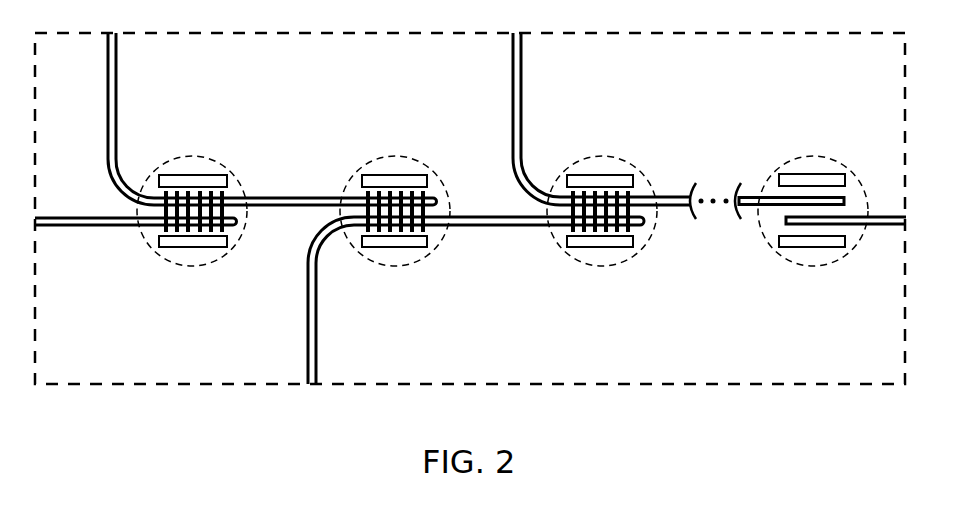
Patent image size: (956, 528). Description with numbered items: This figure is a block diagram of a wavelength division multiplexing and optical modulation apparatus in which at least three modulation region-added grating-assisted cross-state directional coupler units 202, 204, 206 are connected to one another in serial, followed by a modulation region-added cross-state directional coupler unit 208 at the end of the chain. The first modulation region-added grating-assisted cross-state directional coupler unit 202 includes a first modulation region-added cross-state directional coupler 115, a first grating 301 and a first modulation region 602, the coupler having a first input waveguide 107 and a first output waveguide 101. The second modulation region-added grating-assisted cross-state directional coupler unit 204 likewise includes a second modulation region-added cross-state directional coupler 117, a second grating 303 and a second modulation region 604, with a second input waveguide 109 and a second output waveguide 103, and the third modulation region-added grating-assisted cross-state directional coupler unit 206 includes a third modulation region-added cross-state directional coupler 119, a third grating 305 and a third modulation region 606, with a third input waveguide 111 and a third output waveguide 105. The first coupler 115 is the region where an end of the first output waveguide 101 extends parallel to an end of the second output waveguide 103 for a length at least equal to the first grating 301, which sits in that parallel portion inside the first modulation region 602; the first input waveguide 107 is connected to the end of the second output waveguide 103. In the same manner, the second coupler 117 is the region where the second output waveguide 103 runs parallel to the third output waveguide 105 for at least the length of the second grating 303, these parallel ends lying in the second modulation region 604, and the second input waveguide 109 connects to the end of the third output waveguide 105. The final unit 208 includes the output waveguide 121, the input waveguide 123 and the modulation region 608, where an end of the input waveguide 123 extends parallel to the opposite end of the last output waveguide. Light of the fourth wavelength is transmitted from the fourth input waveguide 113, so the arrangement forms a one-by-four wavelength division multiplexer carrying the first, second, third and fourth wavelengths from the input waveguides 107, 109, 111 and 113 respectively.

The first output waveguide 101 is at (95, 222).
The second output waveguide 103 is at (300, 206).
The third output waveguide 105 is at (485, 225).
The first input waveguide 107 is at (110, 105).
The second input waveguide 109 is at (310, 333).
The third input waveguide 111 is at (512, 93).
The fourth input waveguide 113 is at (673, 195).
The first modulation region-added cross-state directional coupler 115 is at (150, 205).
The second modulation region-added cross-state directional coupler 117 is at (352, 222).
The third modulation region-added cross-state directional coupler 119 is at (558, 210).
The output waveguide 121 is at (753, 197).
The input waveguide 123 is at (880, 220).
The first modulation region-added grating-assisted cross-state directional coupler u 202 is at (190, 157).
The second modulation region-added grating-assisted cross-state directional coupler 204 is at (373, 260).
The third modulation region-added grating-assisted cross-state directional coupler u 206 is at (600, 157).
The modulation region-added cross-state directional coupler unit 208 is at (810, 158).
The first grating 301 is at (182, 248).
The second grating 303 is at (400, 180).
The third grating 305 is at (607, 237).
The first modulation region 602 is at (163, 247).
The second modulation region 604 is at (373, 183).
The third modulation region 606 is at (582, 242).
The modulation region 608 is at (812, 242).